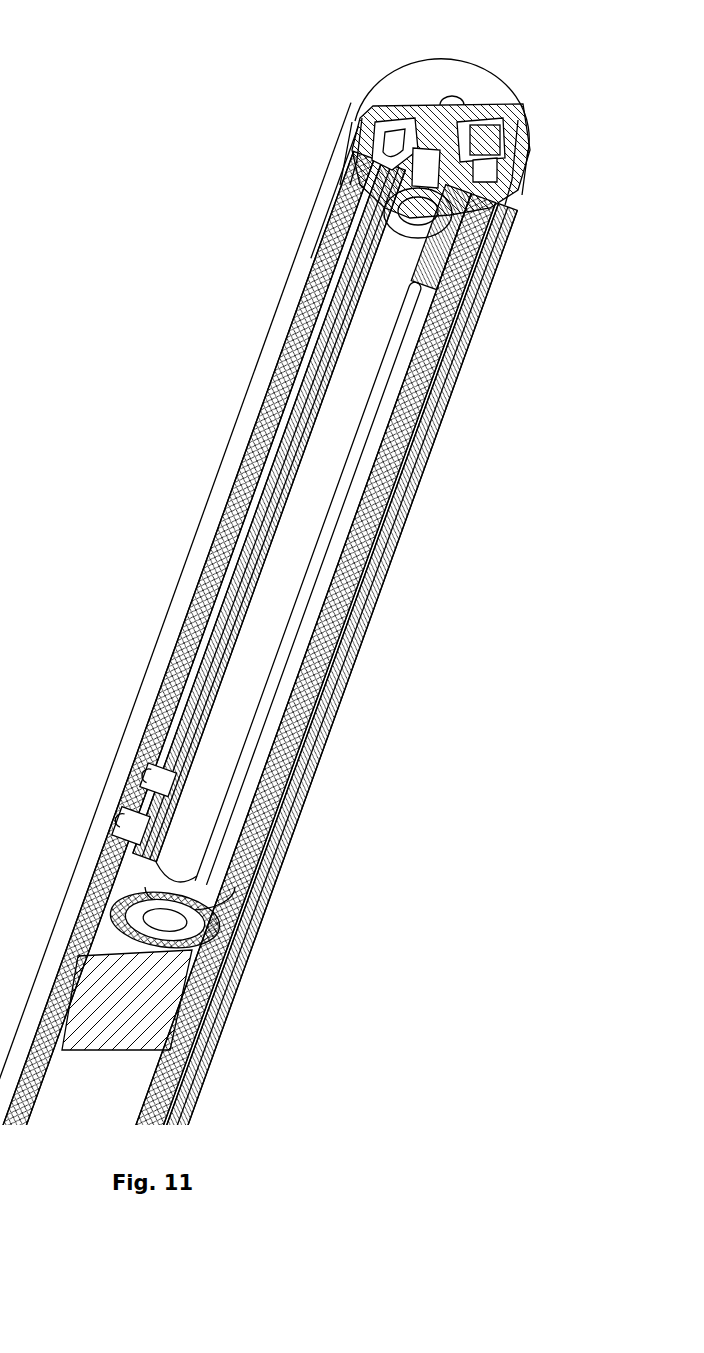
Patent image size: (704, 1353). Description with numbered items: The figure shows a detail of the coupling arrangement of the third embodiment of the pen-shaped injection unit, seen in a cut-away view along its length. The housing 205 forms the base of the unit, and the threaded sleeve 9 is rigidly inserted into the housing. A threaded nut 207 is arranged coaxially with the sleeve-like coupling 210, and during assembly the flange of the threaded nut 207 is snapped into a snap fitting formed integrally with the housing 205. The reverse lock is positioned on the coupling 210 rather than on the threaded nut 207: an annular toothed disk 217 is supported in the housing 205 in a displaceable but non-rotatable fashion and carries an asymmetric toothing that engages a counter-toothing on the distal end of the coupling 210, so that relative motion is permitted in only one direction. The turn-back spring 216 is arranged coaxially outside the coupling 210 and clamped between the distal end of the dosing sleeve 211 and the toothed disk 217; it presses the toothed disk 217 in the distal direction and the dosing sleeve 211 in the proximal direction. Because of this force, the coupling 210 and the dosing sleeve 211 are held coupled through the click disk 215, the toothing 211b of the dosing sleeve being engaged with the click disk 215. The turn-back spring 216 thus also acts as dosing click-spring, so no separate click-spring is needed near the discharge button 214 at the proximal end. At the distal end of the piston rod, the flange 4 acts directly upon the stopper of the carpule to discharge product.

The flange 4 is at (215, 945).
The threaded sleeve 9 is at (310, 308).
The housing 205 is at (215, 517).
The threaded nut 207 is at (418, 248).
The coupling 210 is at (516, 160).
The dosing sleeve 211 is at (272, 396).
The toothing 211b is at (508, 191).
The discharge button 214 is at (400, 88).
The click disk 215 is at (345, 183).
The turn-back spring 216 is at (143, 762).
The toothed disk 217 is at (130, 837).